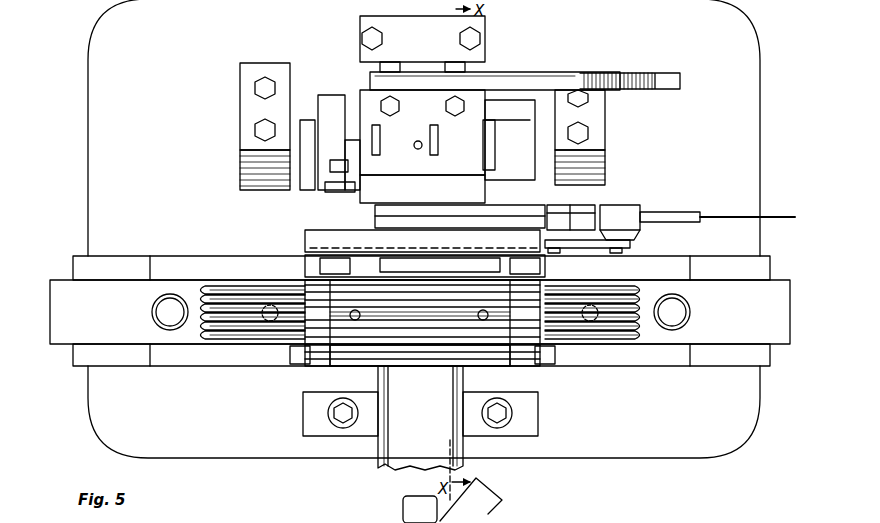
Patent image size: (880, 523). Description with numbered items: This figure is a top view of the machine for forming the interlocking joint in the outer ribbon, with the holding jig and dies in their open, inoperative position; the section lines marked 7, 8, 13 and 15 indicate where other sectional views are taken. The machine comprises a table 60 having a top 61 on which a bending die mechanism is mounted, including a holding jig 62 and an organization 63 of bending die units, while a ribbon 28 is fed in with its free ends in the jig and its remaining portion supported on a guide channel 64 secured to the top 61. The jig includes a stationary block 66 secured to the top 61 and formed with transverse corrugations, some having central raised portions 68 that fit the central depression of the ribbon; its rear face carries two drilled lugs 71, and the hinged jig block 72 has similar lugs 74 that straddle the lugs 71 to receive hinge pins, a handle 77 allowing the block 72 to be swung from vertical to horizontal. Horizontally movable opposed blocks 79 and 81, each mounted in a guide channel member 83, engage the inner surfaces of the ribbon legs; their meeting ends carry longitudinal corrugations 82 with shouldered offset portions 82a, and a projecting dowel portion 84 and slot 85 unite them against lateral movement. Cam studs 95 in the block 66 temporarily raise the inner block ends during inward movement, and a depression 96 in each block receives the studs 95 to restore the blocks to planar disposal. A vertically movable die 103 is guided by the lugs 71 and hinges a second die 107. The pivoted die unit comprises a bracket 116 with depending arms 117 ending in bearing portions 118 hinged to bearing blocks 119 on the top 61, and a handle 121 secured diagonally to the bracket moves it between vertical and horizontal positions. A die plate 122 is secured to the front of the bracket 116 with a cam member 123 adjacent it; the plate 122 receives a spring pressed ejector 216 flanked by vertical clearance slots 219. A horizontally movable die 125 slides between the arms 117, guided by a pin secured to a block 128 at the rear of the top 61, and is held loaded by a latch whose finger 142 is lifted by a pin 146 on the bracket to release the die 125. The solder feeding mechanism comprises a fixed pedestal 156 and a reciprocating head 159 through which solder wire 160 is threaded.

The table 60 is at (738, 442).
The table top 61 is at (766, 408).
The holding jig 62 is at (100, 356).
The organization of bending die units 63 is at (225, 117).
The guide channel 64 is at (492, 462).
The stationary jig block 66 is at (336, 362).
The central raised portions 68 is at (418, 295).
The lugs 71 is at (302, 262).
The hinged jig block 72 is at (298, 240).
The lugs 74 is at (280, 262).
The handle 77 is at (404, 506).
The horizontally movable block 79 is at (92, 304).
The horizontally movable block 81 is at (742, 316).
The longitudinal corrugations 82 is at (266, 320).
The offset portions 82a is at (545, 366).
The guide channel member 83 is at (164, 258).
The dowel portion 84 is at (298, 326).
The slot 85 is at (520, 318).
The cam studs 95 is at (505, 300).
The depression 96 is at (230, 360).
The vertically movable die 103 is at (540, 264).
The second die 107 is at (360, 245).
The bracket 116 is at (332, 92).
The depending arms 117 is at (530, 120).
The bearing portions 118 is at (296, 190).
The bearing blocks 119 is at (240, 158).
The handle 121 is at (683, 80).
The die plate 122 is at (422, 132).
The cam member 123 is at (325, 120).
The horizontally movable die 125 is at (422, 189).
The block 128 is at (488, 28).
The finger 142 is at (332, 192).
The pin 146 is at (345, 170).
The pedestal 156 is at (590, 204).
The reciprocating head 159 is at (640, 208).
The solder wire 160 is at (792, 214).
The spring pressed ejector 216 is at (435, 162).
The vertical clearance slots 219 is at (445, 130).
The section line 7 is at (66, 310).
The section line 8 is at (452, 0).
The section line 13 is at (508, 186).
The section line 15 is at (436, 33).
The ribbons 28 is at (378, 474).